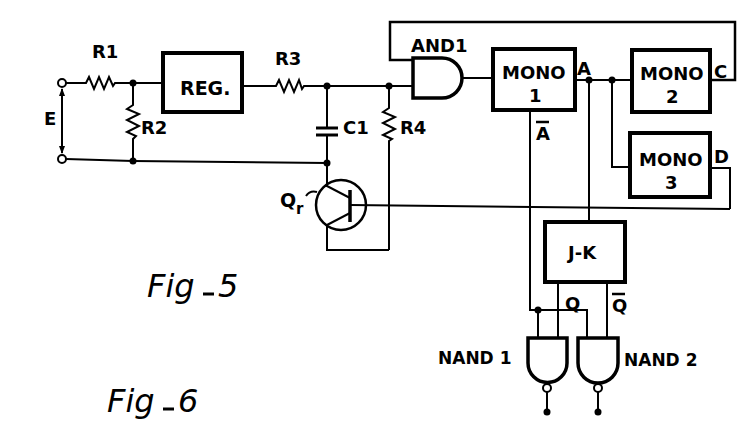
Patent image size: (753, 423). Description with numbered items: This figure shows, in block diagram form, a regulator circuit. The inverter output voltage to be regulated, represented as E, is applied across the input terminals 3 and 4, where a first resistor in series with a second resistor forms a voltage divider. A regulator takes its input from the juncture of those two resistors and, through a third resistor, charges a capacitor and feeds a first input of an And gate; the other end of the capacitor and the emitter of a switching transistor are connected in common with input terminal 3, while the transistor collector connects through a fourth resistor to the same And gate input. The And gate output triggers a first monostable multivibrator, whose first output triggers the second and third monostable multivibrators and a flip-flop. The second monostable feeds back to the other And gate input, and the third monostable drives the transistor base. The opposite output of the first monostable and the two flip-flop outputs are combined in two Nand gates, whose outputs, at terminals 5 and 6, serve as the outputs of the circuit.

The input terminal 3 is at (57, 162).
The input terminal 4 is at (57, 84).
The output terminal of NAND 1 5 is at (542, 412).
The output terminal of NAND 2 6 is at (601, 412).